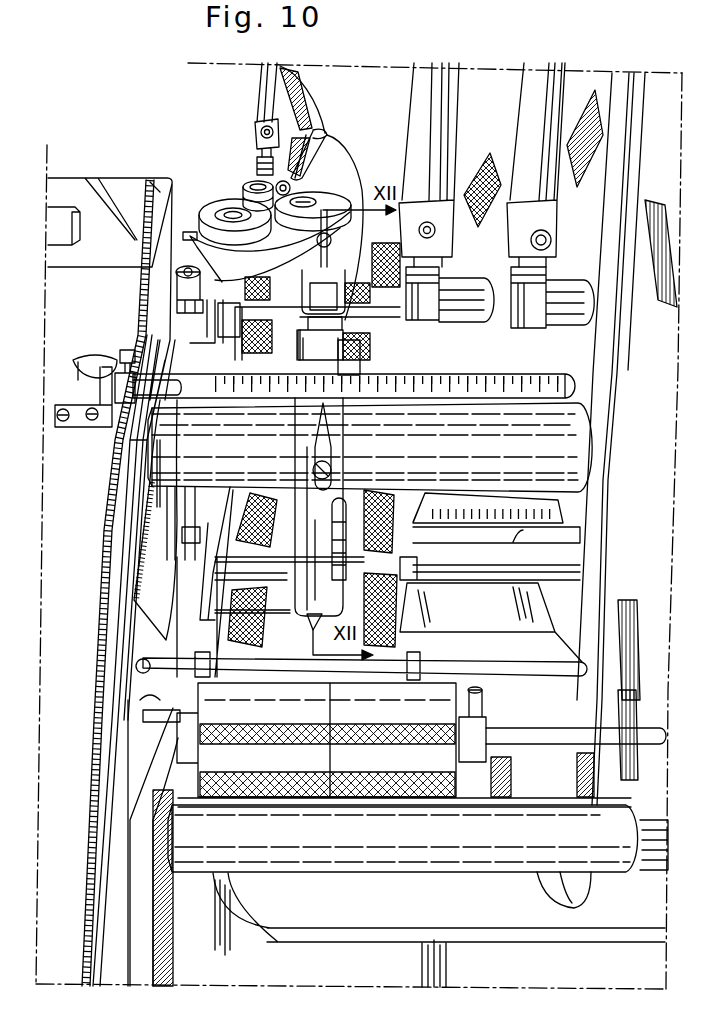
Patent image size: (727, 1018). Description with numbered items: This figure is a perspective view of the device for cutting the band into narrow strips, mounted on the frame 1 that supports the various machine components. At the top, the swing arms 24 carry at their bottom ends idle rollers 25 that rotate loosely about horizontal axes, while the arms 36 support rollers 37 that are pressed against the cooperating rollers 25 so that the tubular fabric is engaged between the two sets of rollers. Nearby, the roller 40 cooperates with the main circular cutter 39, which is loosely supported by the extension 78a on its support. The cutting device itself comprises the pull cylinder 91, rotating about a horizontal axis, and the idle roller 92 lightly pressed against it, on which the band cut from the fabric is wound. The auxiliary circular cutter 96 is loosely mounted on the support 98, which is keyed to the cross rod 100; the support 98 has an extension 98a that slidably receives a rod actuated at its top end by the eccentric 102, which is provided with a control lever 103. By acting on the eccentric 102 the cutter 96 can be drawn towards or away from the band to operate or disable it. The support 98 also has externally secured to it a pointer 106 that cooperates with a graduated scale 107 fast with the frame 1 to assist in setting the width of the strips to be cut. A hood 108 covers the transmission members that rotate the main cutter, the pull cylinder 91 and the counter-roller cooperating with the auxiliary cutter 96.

The frame 1 is at (632, 88).
The swing arms 24 is at (327, 135).
The idle rollers 25 is at (243, 192).
The arms 36 is at (262, 100).
The rollers 37 is at (247, 175).
The circular cutter 39 is at (323, 197).
The roller 40 is at (205, 228).
The extension 78a is at (358, 168).
The pull cylinder 91 is at (482, 845).
The idle roller 92 is at (437, 698).
The circular cutter 96 is at (307, 622).
The support 98 is at (300, 437).
The extension 98a is at (345, 350).
The cross rod 100 is at (531, 430).
The eccentric 102 is at (329, 264).
The control lever 103 is at (270, 253).
The pointer 106 is at (344, 440).
The graduated scale 107 is at (477, 384).
The hood 108 is at (118, 187).